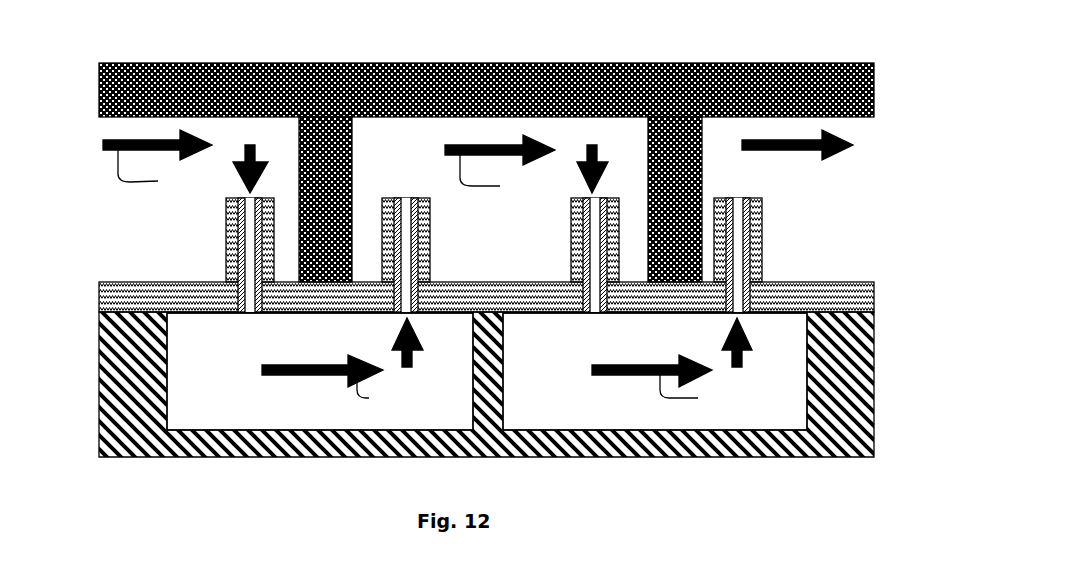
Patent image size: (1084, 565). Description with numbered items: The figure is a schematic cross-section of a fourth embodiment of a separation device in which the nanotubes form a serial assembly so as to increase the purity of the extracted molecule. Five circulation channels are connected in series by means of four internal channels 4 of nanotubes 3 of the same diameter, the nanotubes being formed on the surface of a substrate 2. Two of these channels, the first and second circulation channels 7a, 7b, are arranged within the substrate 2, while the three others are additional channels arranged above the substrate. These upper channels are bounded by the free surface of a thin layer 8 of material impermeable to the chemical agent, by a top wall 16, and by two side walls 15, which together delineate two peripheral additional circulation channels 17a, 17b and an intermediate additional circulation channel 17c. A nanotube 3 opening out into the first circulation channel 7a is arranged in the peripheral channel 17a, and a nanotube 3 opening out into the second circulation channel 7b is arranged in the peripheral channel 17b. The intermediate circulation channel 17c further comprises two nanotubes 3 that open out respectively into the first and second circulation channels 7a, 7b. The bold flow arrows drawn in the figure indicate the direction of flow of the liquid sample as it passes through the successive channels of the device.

The substrate 2 is at (252, 445).
The nanotube 3 is at (226, 267).
The internal channel 4 is at (242, 219).
The first circulation channel 7a is at (429, 420).
The second circulation channel 7b is at (593, 420).
The thin layer 8 is at (810, 296).
The side wall 15 is at (353, 152).
The top wall 16 is at (604, 70).
The peripheral additional circulation channel 17a is at (146, 221).
The peripheral additional circulation channel 17b is at (824, 188).
The intermediate additional circulation channel 17c is at (432, 63).